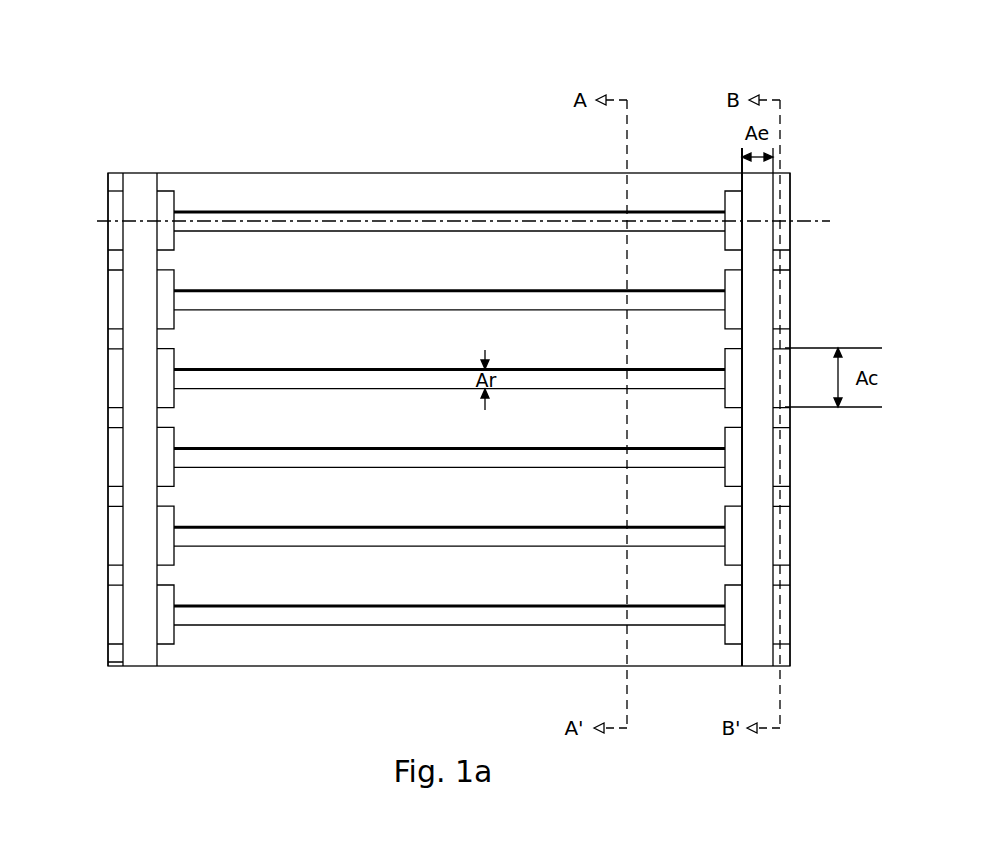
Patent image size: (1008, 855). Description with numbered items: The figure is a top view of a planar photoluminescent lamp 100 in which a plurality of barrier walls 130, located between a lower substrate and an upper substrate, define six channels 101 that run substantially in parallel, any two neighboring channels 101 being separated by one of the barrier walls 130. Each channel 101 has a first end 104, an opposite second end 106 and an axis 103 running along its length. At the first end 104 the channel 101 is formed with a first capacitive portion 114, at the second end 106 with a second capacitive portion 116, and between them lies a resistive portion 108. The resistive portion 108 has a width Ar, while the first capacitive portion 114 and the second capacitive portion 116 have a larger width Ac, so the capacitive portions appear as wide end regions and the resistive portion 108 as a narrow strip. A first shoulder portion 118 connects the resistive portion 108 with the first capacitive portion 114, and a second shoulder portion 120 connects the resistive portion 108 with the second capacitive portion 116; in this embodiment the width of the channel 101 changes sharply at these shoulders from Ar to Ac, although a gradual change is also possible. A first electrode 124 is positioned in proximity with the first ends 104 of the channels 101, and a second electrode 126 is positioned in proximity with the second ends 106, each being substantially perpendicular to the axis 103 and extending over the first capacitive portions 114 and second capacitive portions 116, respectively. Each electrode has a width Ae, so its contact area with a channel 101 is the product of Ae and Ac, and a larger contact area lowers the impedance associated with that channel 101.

The planar photoluminescent lamp 100 is at (492, 52).
The channel 101 is at (186, 218).
The axis 103 is at (463, 222).
The first end 104 is at (106, 618).
The second end 106 is at (790, 628).
The resistive portion 108 is at (338, 215).
The first capacitive portion 114 is at (118, 637).
The second capacitive portion 116 is at (772, 610).
The first shoulder portion 118 is at (175, 637).
The second shoulder portion 120 is at (725, 631).
The first electrode 124 is at (139, 186).
The second electrode 126 is at (757, 196).
The barrier wall 130 is at (343, 332).